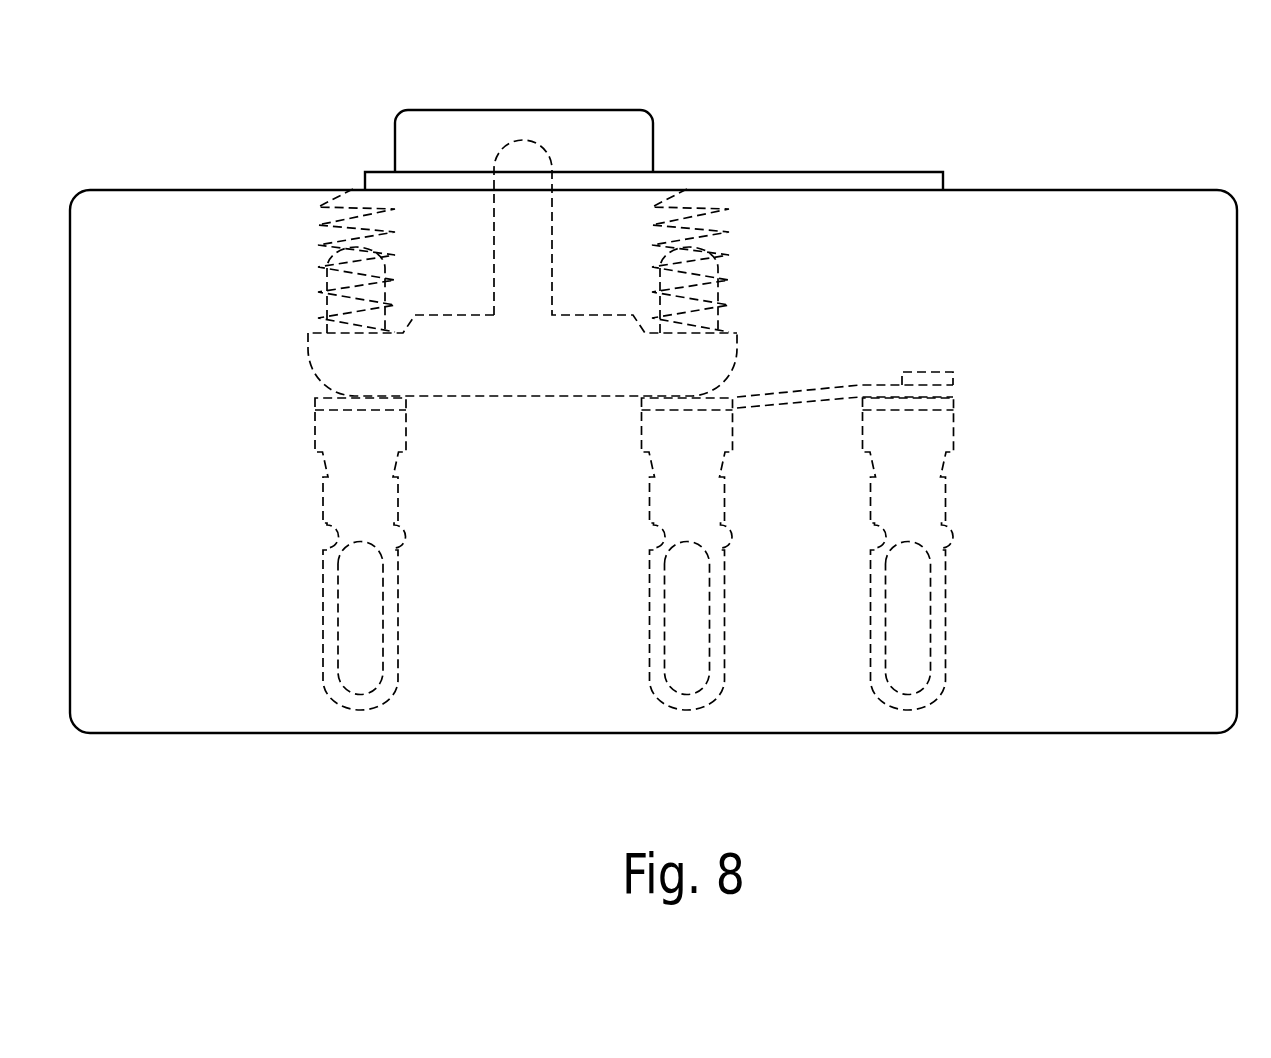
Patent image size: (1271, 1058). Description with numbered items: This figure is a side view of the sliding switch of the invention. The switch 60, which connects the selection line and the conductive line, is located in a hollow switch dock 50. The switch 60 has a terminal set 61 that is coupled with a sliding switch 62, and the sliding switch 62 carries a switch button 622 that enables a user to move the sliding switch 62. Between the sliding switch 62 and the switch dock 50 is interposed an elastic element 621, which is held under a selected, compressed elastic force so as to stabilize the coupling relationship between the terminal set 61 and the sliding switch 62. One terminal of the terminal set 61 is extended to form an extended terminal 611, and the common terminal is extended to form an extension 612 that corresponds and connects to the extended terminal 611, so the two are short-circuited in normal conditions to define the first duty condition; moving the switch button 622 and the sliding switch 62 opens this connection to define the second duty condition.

The switch dock 50 is at (1010, 180).
The switch 60 is at (1110, 278).
The terminal set 61 is at (965, 578).
The extended terminal 611 is at (808, 393).
The extension 612 is at (937, 378).
The sliding switch 62 is at (312, 352).
The elastic element 621 is at (327, 242).
The switch button 622 is at (610, 132).